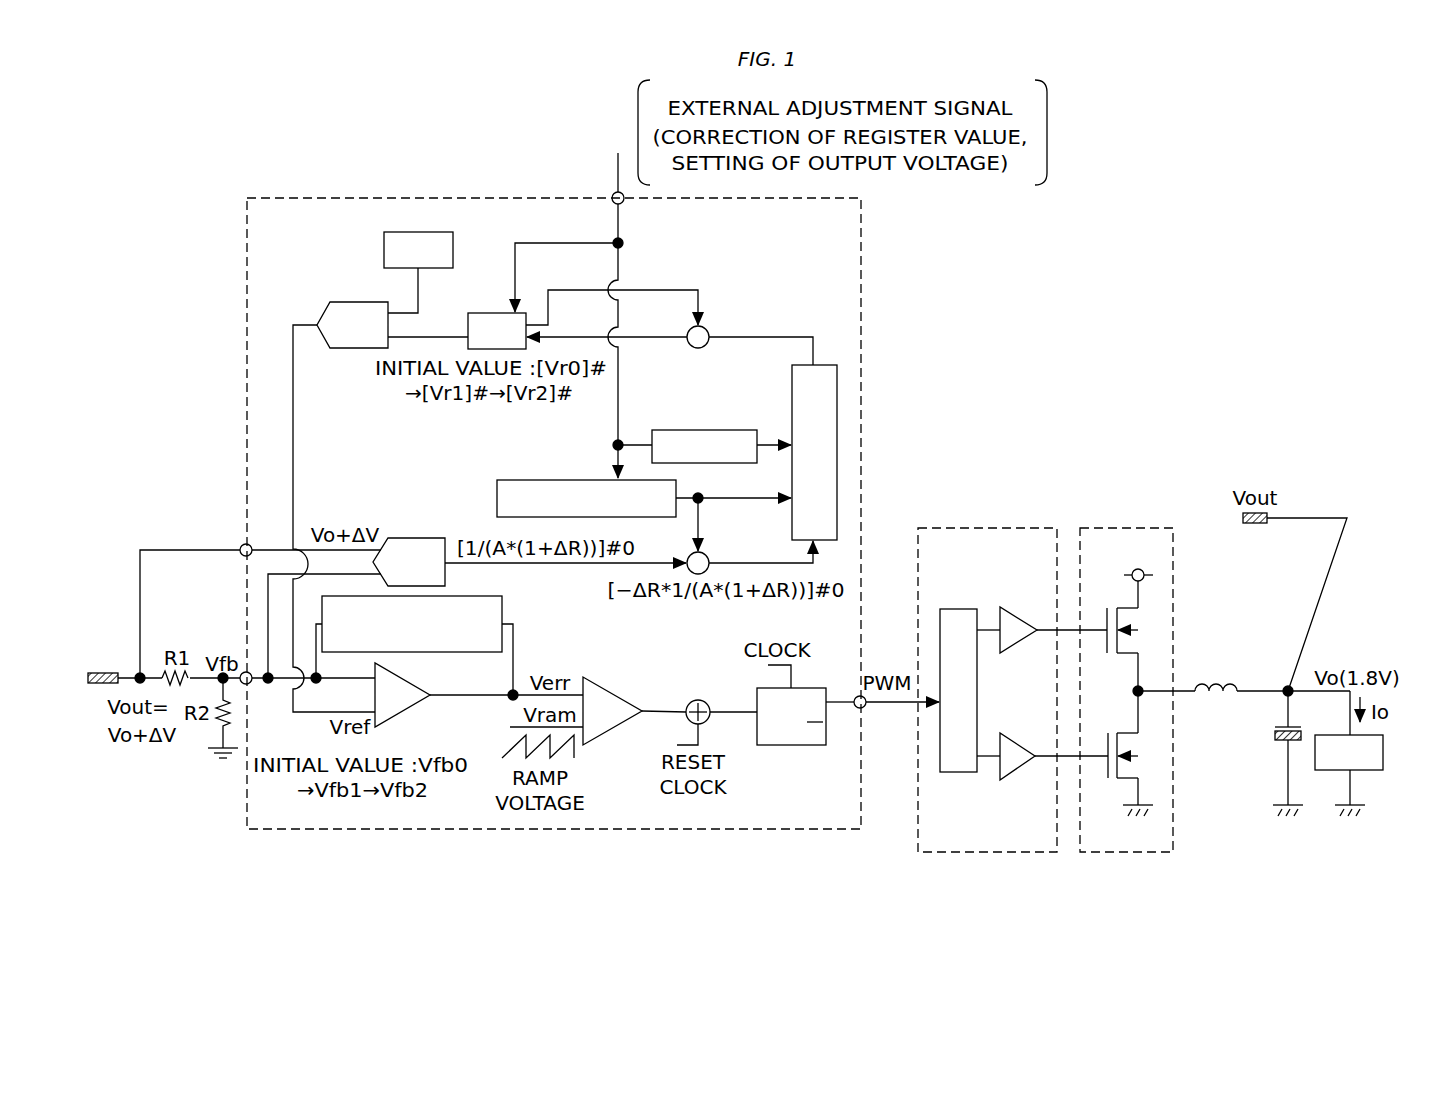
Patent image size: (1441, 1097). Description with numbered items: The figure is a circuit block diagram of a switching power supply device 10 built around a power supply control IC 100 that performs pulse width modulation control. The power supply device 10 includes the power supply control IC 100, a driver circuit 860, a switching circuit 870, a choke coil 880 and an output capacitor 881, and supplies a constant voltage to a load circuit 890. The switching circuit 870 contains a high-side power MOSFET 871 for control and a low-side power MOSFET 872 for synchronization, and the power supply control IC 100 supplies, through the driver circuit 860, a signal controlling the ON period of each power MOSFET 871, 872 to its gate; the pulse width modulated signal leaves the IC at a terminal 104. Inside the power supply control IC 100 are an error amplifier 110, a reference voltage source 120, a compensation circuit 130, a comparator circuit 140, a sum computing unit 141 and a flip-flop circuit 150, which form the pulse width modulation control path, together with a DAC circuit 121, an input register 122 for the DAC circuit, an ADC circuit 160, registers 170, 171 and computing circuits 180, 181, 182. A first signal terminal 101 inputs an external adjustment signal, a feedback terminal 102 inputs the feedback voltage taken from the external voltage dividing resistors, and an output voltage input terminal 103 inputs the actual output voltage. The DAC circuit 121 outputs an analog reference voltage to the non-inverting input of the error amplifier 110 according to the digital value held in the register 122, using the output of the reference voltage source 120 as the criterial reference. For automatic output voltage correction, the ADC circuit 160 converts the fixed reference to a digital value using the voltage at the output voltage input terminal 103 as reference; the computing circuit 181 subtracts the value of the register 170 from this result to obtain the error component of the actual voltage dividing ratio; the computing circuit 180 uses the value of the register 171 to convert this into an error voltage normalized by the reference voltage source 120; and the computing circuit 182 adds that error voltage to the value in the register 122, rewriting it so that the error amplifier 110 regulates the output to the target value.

The power supply device 10 is at (1082, 408).
The power supply control IC 100 is at (370, 197).
The first signal terminal 101 is at (613, 193).
The Vfb terminal 102 is at (245, 671).
The Vo input terminal 103 is at (243, 545).
The PWM output terminal 104 is at (866, 708).
The error amplifier 110 is at (421, 704).
The reference voltage source 120 is at (453, 250).
The DAC circuit 121 is at (355, 350).
The input register for the DAC circuit 122 is at (488, 312).
The compensation circuit 130 is at (502, 604).
The comparator circuit 140 is at (620, 690).
The sum computing unit 141 is at (698, 700).
The flip-flop circuit 150 is at (790, 746).
The ADC circuit 160 is at (413, 537).
The register 170 is at (496, 500).
The register 171 is at (745, 429).
The computing circuit 180 is at (828, 364).
The computing circuit 181 is at (712, 557).
The computing circuit 182 is at (698, 349).
The driver circuit 860 is at (990, 527).
The switching circuit 870 is at (1157, 662).
The high-side power MOSFET 871 is at (1140, 615).
The low-side power MOSFET 872 is at (1140, 745).
The choke coil 880 is at (1197, 673).
The output capacitor 881 is at (1283, 745).
The load circuit 890 is at (1383, 750).